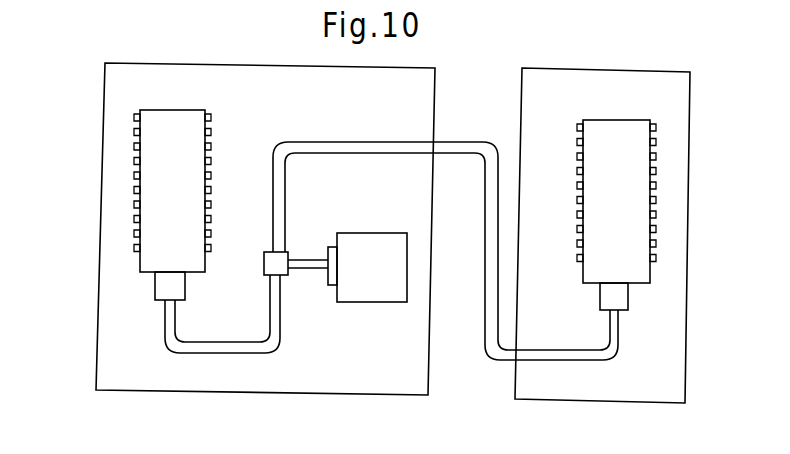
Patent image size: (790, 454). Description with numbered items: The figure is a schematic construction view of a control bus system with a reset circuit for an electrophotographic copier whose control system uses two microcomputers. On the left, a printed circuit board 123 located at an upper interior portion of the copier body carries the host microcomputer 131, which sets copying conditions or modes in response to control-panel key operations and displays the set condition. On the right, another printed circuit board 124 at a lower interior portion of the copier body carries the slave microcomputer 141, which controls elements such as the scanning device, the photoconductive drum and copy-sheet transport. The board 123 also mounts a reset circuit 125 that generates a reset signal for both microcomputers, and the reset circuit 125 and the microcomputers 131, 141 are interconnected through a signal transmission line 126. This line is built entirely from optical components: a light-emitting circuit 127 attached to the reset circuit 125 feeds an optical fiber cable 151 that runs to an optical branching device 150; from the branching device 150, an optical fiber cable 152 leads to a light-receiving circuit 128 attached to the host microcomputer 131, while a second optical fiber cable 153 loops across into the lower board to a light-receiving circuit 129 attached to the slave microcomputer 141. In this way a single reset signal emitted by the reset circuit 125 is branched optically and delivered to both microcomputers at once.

The printed circuit board 123 is at (102, 148).
The printed circuit board 124 is at (690, 153).
The host microcomputer 131 is at (137, 262).
The slave microcomputer 141 is at (650, 272).
The light-receiving circuit 128 is at (152, 292).
The light-receiving circuit 129 is at (629, 306).
The optical fiber cable 152 is at (168, 345).
The optical fiber cable 153 is at (477, 142).
The optical branching device 150 is at (290, 252).
The optical fiber cable 151 is at (316, 257).
The light-emitting circuit 127 is at (335, 285).
The reset circuit 125 is at (378, 302).
The signal transmission line 126 is at (226, 368).